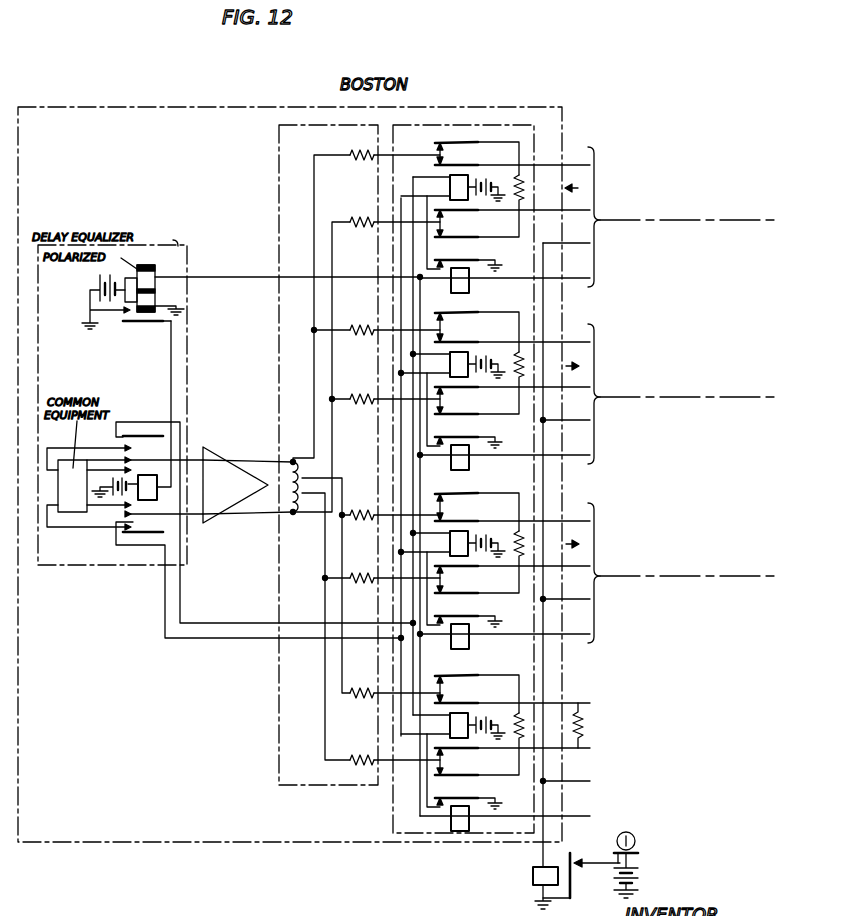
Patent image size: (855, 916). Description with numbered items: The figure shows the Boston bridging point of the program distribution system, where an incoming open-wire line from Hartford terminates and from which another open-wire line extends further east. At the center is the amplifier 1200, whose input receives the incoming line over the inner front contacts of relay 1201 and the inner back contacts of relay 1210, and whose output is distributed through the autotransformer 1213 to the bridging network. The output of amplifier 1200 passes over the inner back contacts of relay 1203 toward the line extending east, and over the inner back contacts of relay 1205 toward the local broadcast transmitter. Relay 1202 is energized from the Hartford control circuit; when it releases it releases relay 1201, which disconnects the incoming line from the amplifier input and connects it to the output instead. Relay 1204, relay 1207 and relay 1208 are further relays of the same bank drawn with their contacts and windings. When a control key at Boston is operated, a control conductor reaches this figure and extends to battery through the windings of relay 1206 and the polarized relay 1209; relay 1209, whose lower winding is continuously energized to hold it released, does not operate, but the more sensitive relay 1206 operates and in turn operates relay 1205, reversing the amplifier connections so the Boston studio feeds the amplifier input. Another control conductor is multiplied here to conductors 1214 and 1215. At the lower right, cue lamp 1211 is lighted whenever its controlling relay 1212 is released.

The amplifier 1200 is at (214, 453).
The relay 1201 is at (449, 178).
The relay 1202 is at (470, 285).
The relay 1203 is at (457, 352).
The relay 1204 is at (470, 461).
The relay 1205 is at (457, 531).
The relay 1206 is at (470, 643).
The relay 1207 is at (457, 712).
The relay 1208 is at (467, 806).
The polarized relay 1209 is at (160, 264).
The relay 1210 is at (149, 501).
The cue lamp 1211 is at (636, 836).
The controlling relay 1212 is at (533, 871).
The autotransformer 1213 is at (288, 469).
The conductor 1214 is at (574, 245).
The conductor 1215 is at (576, 420).